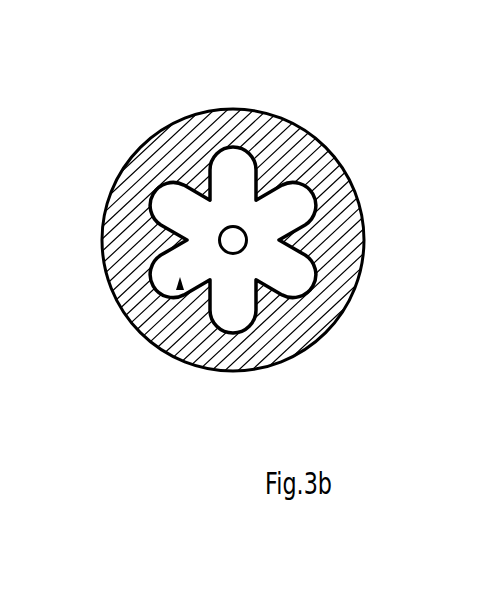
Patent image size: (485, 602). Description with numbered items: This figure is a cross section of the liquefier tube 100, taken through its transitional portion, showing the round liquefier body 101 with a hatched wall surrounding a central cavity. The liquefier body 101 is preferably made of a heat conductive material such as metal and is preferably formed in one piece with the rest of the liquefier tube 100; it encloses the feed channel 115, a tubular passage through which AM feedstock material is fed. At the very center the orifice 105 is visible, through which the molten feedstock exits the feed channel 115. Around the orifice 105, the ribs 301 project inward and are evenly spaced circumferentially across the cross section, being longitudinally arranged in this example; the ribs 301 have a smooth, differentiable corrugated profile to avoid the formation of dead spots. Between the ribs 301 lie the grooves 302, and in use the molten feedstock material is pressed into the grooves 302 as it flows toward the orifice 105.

The liquefier tube 100 is at (196, 84).
The liquefier body 101 is at (148, 168).
The orifice 105 is at (225, 229).
The feed channel 115 is at (180, 290).
The ribs 301 is at (195, 302).
The grooves 302 is at (288, 205).